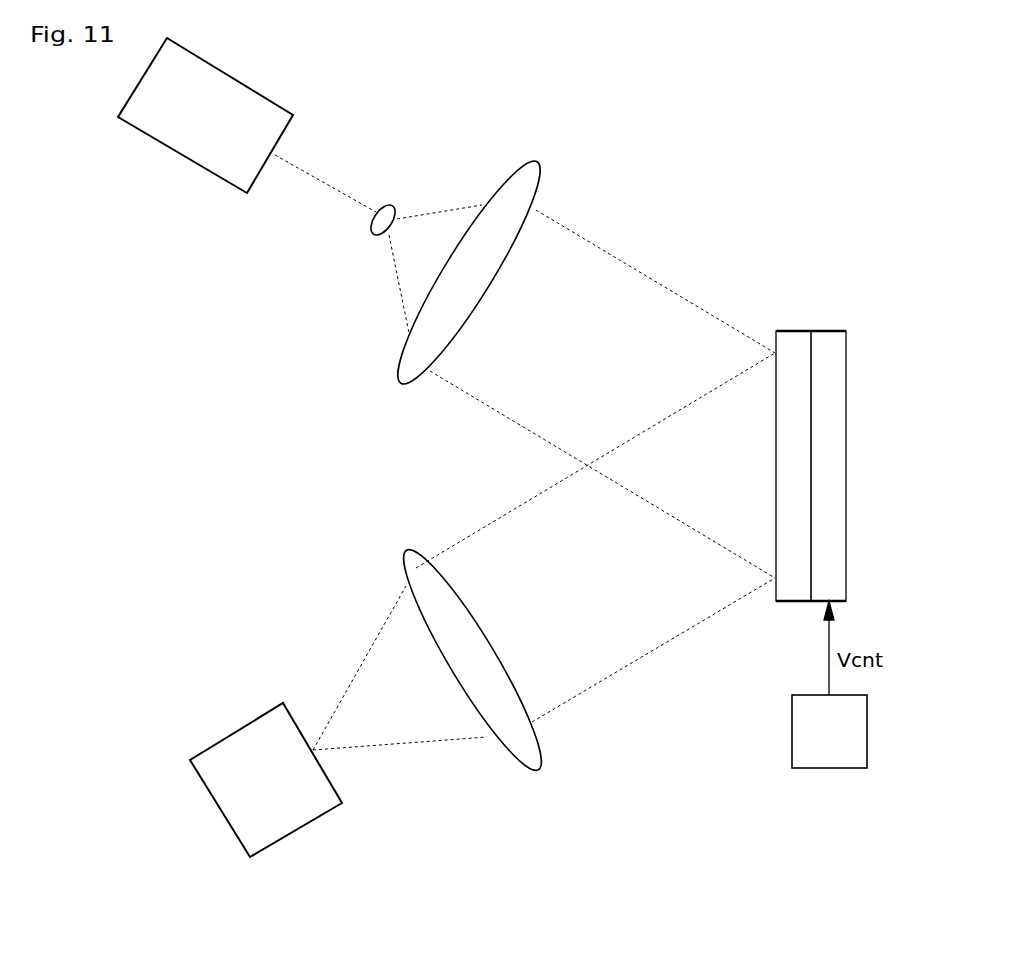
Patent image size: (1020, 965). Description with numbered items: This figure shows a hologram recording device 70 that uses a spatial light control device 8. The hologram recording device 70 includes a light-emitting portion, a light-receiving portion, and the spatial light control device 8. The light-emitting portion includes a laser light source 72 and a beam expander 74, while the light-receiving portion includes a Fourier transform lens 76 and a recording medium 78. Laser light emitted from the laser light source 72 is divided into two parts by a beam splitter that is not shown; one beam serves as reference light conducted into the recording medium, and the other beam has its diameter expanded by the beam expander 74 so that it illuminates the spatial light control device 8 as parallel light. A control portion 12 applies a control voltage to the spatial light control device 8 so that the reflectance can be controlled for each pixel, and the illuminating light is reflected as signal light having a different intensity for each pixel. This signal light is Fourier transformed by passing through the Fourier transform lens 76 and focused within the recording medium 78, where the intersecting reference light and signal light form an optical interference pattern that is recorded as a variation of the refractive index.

The hologram recording device 70 is at (507, 949).
The laser light source 72 is at (233, 72).
The beam expander 74 is at (538, 162).
The Fourier transform lens 76 is at (538, 770).
The recording medium 78 is at (297, 828).
The spatial light control device 8 is at (864, 311).
The control portion 12 is at (830, 770).